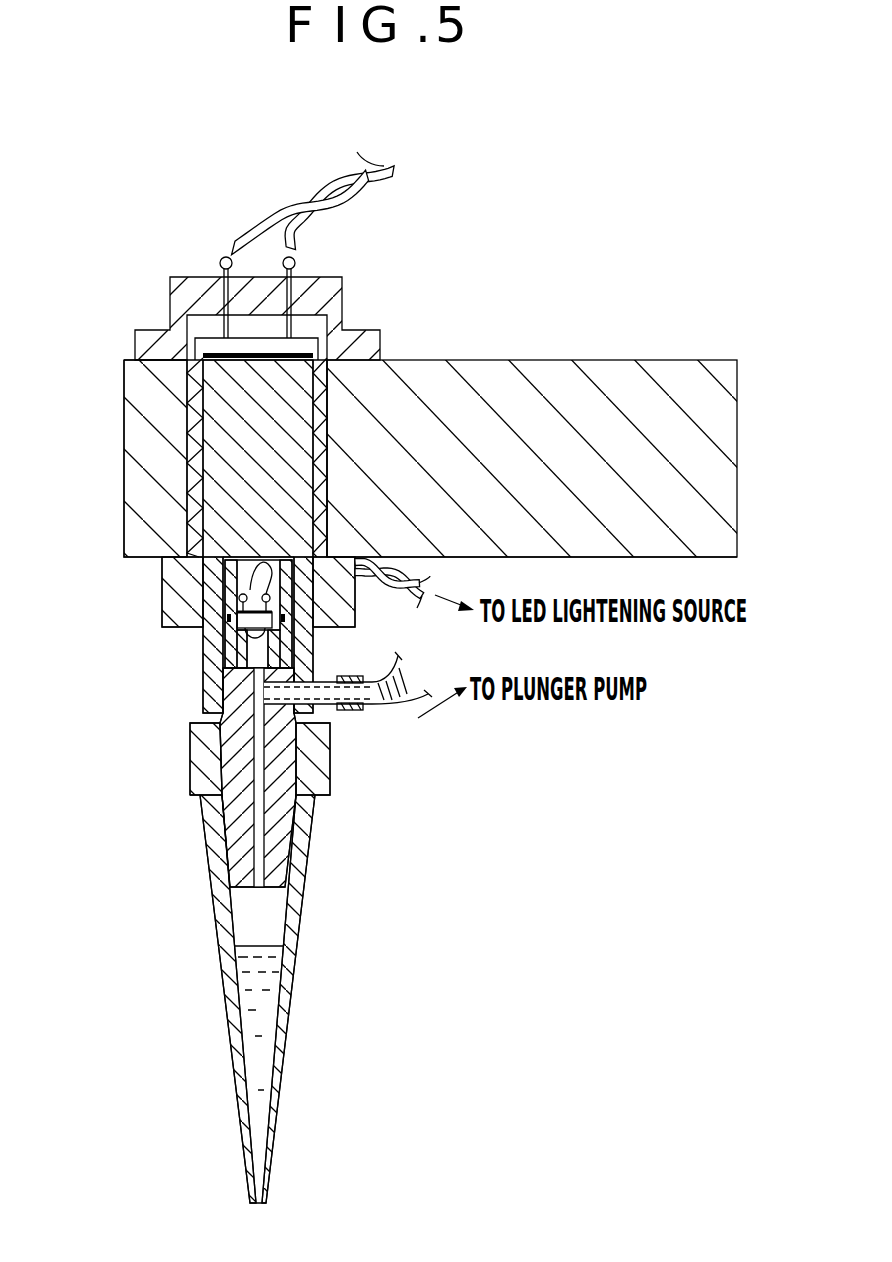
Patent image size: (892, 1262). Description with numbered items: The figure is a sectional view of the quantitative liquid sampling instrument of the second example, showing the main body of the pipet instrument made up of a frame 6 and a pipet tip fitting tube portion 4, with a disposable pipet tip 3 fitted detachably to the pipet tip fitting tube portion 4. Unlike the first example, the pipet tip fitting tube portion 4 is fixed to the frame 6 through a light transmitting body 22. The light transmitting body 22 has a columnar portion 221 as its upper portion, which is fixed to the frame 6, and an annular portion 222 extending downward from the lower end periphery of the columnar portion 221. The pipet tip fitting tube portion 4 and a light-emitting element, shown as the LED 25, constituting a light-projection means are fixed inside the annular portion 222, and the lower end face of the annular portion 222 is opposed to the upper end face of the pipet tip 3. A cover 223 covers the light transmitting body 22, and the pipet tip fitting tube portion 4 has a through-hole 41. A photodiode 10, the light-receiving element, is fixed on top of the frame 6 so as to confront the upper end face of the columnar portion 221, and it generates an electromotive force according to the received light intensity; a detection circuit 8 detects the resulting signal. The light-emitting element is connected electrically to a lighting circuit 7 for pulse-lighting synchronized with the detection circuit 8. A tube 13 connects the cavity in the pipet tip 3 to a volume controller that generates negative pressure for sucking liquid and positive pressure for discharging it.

The pipet tip 3 is at (230, 983).
The pipet tip fitting tube portion 4 is at (277, 855).
The frame 6 is at (522, 405).
The lighting circuit 7 is at (393, 585).
The detection circuit 8 is at (385, 150).
The photodiode 10 is at (210, 343).
The tube 13 is at (370, 707).
The light transmitting body 22 is at (218, 502).
The LED 25 is at (232, 617).
The through-hole 41 is at (255, 760).
The columnar portion 221 is at (227, 432).
The annular portion 222 is at (218, 678).
The cover 223 is at (193, 382).